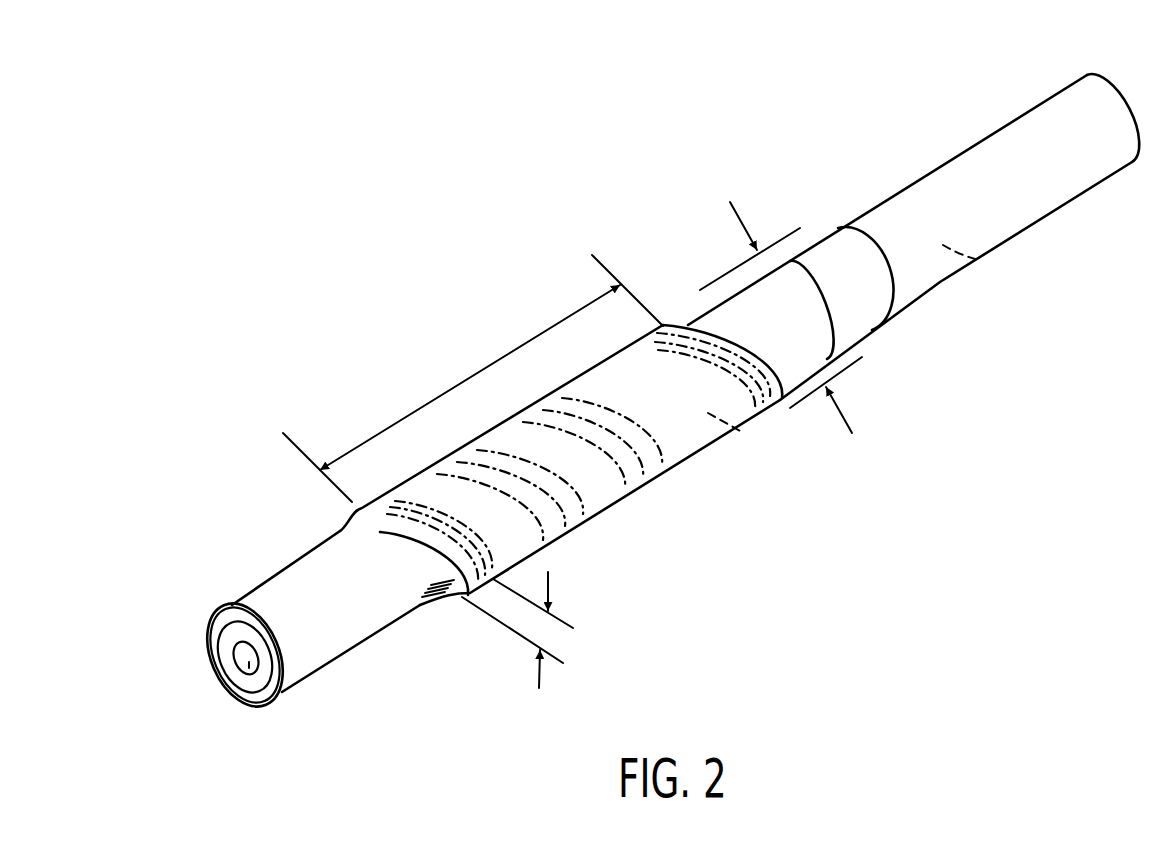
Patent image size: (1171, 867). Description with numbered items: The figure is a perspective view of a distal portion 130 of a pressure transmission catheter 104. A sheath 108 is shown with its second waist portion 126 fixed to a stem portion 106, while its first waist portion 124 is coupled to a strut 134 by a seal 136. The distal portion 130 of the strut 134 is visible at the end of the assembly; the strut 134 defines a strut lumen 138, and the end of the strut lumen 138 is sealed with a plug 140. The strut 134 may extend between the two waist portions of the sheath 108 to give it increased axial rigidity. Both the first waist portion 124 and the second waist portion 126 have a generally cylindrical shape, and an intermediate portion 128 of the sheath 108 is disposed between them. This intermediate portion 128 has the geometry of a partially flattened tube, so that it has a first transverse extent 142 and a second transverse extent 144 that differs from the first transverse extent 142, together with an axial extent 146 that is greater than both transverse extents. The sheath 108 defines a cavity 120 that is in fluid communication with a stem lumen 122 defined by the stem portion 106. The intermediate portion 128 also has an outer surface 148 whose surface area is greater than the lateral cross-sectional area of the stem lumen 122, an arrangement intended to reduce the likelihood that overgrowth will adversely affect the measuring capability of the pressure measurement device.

The pressure transmission catheter 104 is at (898, 553).
The stem portion 106 is at (1060, 207).
The sheath 108 is at (613, 506).
The cavity 120 is at (745, 433).
The stem lumen 122 is at (978, 262).
The first waist portion 124 is at (307, 679).
The second waist portion 126 is at (873, 331).
The intermediate portion 128 is at (703, 453).
The distal portion 130 is at (237, 627).
The strut 134 is at (222, 650).
The seal 136 is at (216, 632).
The strut lumen 138 is at (250, 659).
The plug 140 is at (249, 668).
The first transverse extent 142 is at (847, 412).
The second transverse extent 144 is at (541, 684).
The axial extent 146 is at (465, 380).
The outer surface 148 is at (661, 474).